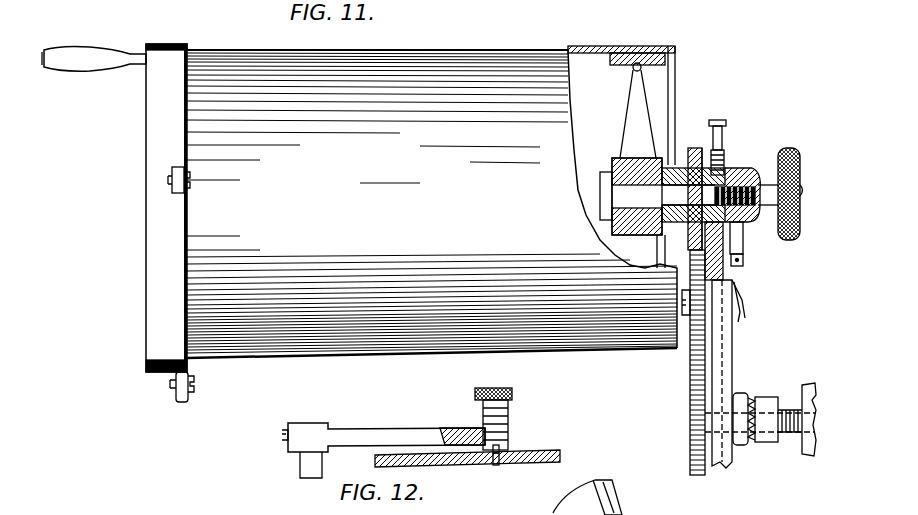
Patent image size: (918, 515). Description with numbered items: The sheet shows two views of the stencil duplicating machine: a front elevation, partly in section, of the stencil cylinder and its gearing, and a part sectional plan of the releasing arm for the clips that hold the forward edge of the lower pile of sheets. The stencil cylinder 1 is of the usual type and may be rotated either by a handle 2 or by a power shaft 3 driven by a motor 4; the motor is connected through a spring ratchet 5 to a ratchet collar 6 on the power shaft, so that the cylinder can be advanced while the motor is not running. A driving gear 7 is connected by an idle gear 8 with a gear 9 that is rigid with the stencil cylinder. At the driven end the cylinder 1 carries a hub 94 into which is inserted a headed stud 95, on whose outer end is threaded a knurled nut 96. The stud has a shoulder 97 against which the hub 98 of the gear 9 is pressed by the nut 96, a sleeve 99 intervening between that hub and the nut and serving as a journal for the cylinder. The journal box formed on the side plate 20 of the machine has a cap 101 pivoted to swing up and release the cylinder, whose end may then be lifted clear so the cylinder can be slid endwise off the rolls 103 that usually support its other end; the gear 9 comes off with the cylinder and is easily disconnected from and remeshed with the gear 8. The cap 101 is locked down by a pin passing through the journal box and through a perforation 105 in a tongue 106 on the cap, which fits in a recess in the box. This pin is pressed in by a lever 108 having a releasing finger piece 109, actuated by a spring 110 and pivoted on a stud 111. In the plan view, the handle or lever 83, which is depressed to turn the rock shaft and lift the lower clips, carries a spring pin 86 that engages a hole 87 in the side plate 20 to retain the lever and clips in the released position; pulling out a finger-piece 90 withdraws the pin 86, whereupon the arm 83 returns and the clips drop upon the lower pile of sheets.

In FIG. 11, the stencil cylinder 1 is at (538, 290).
In FIG. 11, the handle 2 is at (95, 52).
In FIG. 11, the power shaft 3 is at (740, 445).
In FIG. 11, the motor 4 is at (808, 454).
In FIG. 11, the spring ratchet 5 is at (770, 397).
In FIG. 11, the ratchet collar 6 is at (750, 398).
In FIG. 11, the driving gear 7 is at (692, 462).
In FIG. 11, the idle gear 8 is at (690, 362).
In FIG. 11, the gear 9 is at (710, 130).
In FIG. 11, the side plate 20 is at (732, 358).
In FIG. 12, the side plate 20 is at (538, 464).
In FIG. 12, the handle or lever 83 is at (396, 434).
In FIG. 12, the spring pin 86 is at (500, 448).
In FIG. 12, the hole 87 is at (496, 465).
In FIG. 12, the finger-piece 90 is at (505, 390).
In FIG. 11, the hub 94 is at (618, 159).
In FIG. 11, the headed stud 95 is at (600, 196).
In FIG. 11, the knurled nut 96 is at (778, 168).
In FIG. 11, the shoulder 97 is at (655, 196).
In FIG. 11, the hub of the gear 98 is at (683, 165).
In FIG. 11, the sleeve 99 is at (714, 203).
In FIG. 11, the cap 101 is at (726, 152).
In FIG. 11, the rolls 103 is at (178, 193).
In FIG. 12, the perforation 105 is at (610, 494).
In FIG. 12, the tongue 106 is at (629, 497).
In FIG. 11, the lever 108 is at (743, 238).
In FIG. 11, the releasing finger piece 109 is at (742, 302).
In FIG. 11, the spring 110 is at (738, 322).
In FIG. 11, the stud 111 is at (743, 262).